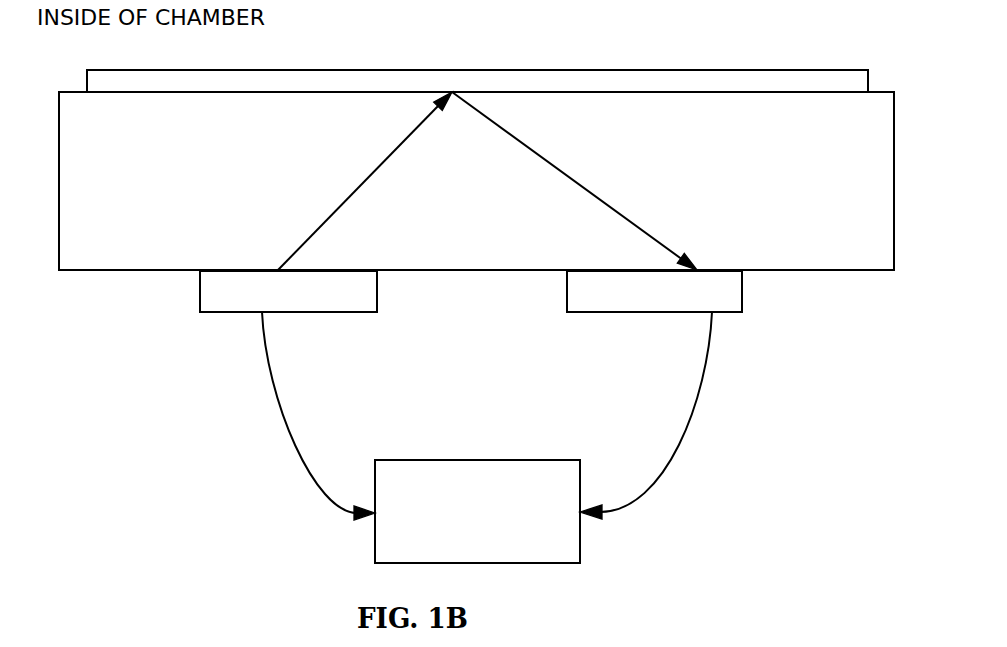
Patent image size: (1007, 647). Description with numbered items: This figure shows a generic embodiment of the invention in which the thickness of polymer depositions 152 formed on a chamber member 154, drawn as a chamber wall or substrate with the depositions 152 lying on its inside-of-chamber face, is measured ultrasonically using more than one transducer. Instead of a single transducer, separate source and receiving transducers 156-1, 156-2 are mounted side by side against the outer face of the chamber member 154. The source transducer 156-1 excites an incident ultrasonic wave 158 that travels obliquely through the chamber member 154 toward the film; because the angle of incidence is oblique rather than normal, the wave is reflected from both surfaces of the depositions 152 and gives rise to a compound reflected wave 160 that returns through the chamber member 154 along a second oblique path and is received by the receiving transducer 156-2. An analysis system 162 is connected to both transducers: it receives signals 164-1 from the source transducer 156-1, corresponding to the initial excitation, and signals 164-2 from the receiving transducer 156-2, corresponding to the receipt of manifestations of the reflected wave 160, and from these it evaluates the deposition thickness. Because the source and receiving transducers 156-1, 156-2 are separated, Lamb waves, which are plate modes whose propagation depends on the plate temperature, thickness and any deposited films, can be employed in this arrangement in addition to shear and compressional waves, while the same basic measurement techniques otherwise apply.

The depositions 152 is at (843, 70).
The chamber member 154 is at (257, 214).
The source transducer 156-1 is at (298, 302).
The receiving transducer 156-2 is at (668, 302).
The incident ultrasonic wave 158 is at (365, 181).
The reflected wave 160 is at (574, 181).
The analysis system 162 is at (545, 534).
The signals 164-1 is at (318, 422).
The signals 164-2 is at (646, 421).